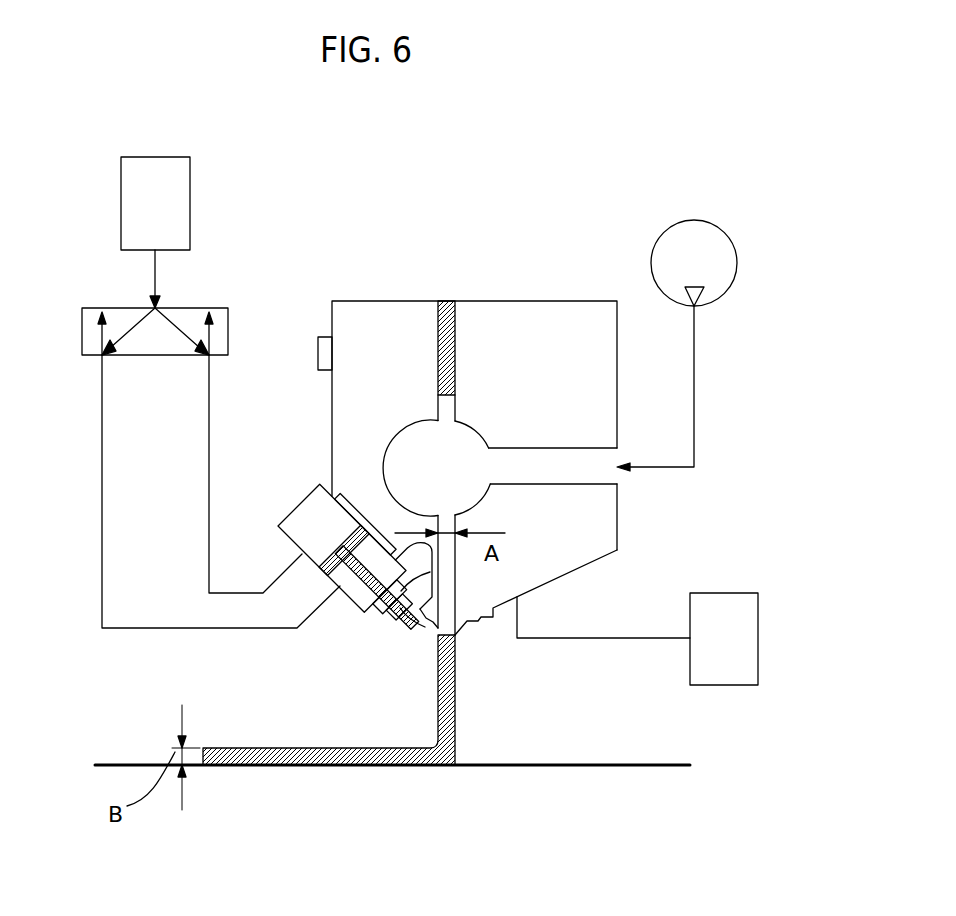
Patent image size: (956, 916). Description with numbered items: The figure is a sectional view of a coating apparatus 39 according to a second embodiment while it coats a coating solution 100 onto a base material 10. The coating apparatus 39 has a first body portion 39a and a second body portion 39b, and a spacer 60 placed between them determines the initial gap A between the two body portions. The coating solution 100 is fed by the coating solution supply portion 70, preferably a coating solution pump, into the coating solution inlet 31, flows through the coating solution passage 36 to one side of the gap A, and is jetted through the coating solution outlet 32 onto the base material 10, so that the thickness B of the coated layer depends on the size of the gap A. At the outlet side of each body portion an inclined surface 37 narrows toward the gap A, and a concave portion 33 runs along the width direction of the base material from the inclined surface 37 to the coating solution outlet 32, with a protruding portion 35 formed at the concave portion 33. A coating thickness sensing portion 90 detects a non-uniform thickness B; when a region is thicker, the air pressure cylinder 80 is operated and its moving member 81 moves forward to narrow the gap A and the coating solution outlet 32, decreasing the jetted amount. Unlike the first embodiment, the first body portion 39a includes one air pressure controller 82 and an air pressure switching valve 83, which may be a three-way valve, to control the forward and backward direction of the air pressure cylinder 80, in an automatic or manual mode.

The base material 10 is at (548, 768).
The coating solution inlet 31 is at (619, 472).
The coating solution outlet 32 is at (455, 652).
The concave portion 33 is at (383, 618).
The protruding portion 35 is at (427, 622).
The coating solution passage 36 is at (524, 470).
The inclined surface 37 is at (372, 515).
The coating apparatus 39 is at (533, 190).
The first body portion 39a is at (405, 308).
The second body portion 39b is at (498, 310).
The spacer 60 is at (445, 300).
The coating solution supply portion 70 is at (729, 262).
The air pressure cylinder 80 is at (300, 513).
The moving member 81 is at (398, 632).
The air pressure controller 82 is at (121, 200).
The air pressure switching valve 83 is at (82, 337).
The coating thickness sensing portion 90 is at (758, 636).
The coating solution 100 is at (370, 766).